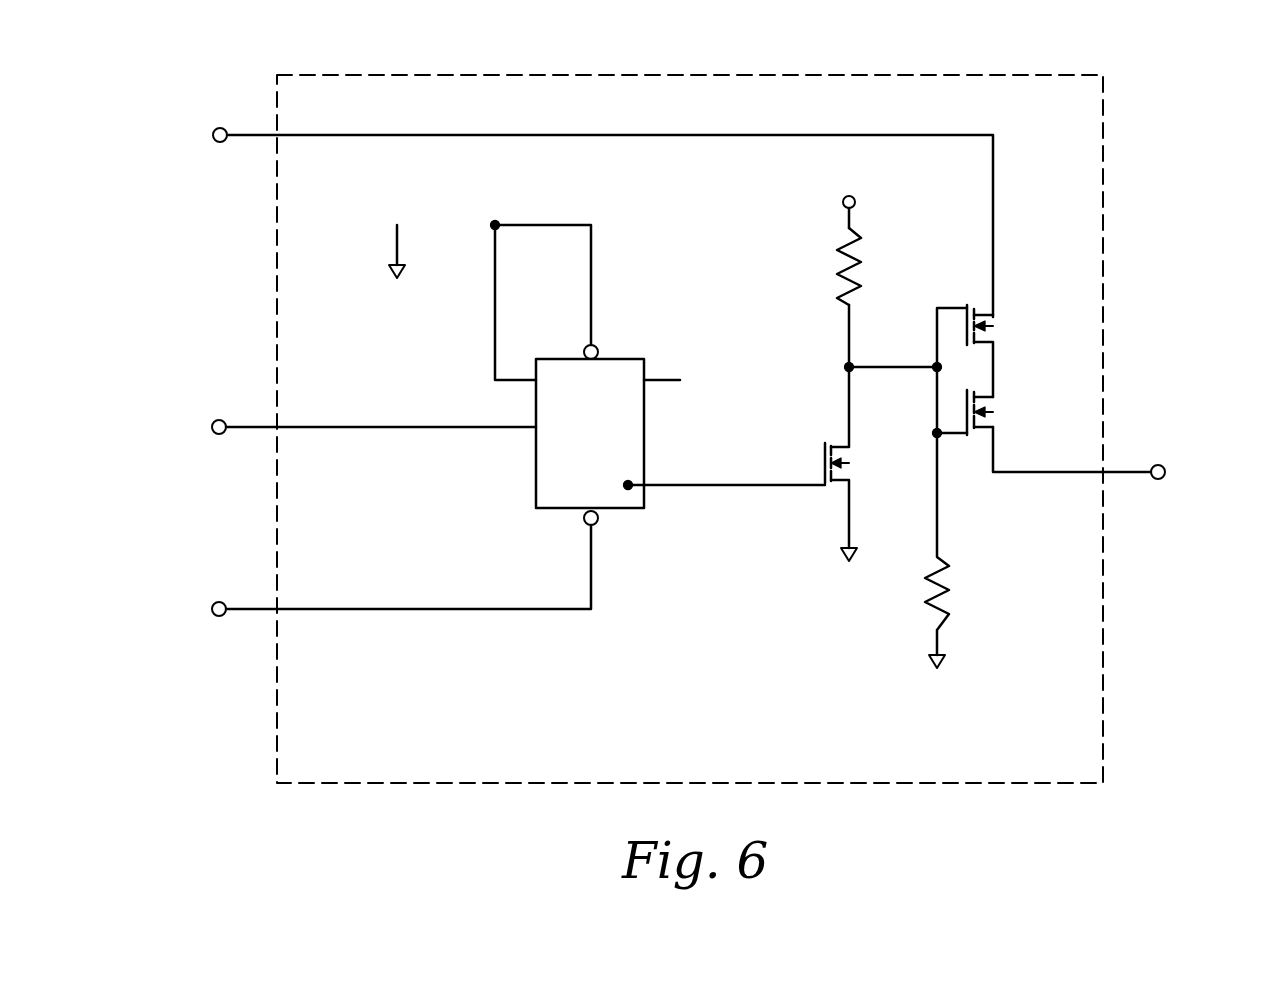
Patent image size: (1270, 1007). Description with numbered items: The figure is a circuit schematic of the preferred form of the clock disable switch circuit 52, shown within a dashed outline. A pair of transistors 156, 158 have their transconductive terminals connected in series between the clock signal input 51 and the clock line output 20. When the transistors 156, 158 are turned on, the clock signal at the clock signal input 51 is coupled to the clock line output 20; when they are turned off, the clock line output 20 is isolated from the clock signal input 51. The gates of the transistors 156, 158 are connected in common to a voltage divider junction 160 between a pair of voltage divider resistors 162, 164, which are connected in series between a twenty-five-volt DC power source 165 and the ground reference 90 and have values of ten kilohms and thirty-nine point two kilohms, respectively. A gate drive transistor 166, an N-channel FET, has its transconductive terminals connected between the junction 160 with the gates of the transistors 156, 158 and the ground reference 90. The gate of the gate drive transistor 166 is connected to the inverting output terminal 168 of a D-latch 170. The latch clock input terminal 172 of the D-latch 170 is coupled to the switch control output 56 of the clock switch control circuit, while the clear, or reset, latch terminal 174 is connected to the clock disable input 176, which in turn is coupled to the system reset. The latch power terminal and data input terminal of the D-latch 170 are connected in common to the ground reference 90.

The clock line output 20 is at (1160, 465).
The clock signal input 51 is at (218, 128).
The clock disable switch circuit 52 is at (398, 92).
The switch control output 56 is at (216, 420).
The ground reference 90 is at (393, 275).
The transistor 156 is at (978, 320).
The transistor 158 is at (980, 412).
The voltage divider junction 160 is at (852, 365).
The voltage divider resistor 162 is at (860, 290).
The voltage divider resistor 164 is at (945, 590).
The +25-volts DC power source 165 is at (842, 202).
The gate drive transistor 166 is at (822, 465).
The inverting output terminal 168 is at (676, 490).
The D-latch 170 is at (630, 358).
The latch clock input terminal 172 is at (497, 430).
The clear latch terminal 174 is at (583, 522).
The clock disable input 176 is at (218, 617).